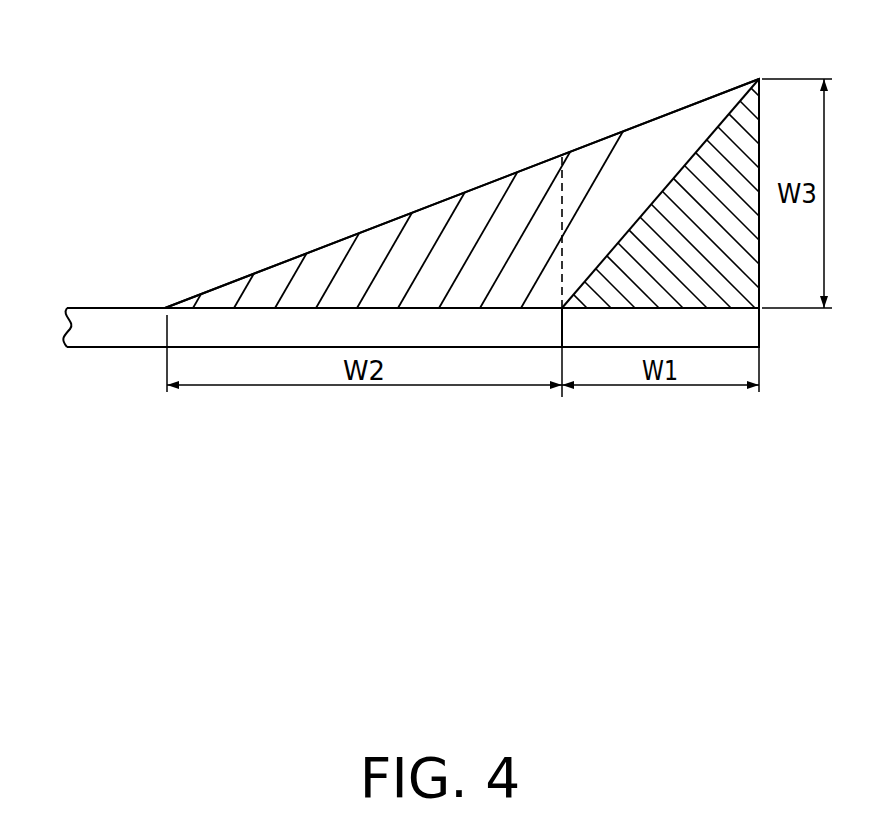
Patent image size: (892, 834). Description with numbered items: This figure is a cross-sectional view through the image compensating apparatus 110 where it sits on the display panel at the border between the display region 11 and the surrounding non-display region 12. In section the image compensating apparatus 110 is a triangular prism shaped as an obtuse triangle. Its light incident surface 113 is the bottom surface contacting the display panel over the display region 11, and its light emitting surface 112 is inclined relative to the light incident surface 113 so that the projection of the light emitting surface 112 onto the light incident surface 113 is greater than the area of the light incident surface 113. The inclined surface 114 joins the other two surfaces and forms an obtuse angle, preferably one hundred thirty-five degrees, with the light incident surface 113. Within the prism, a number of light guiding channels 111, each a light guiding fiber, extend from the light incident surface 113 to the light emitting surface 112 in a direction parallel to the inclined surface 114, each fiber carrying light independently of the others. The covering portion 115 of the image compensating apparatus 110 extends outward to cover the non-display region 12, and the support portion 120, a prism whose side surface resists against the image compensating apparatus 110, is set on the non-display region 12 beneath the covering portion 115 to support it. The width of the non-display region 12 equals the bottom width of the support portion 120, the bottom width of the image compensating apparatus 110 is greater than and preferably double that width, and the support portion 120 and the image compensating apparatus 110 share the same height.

The display region 11 is at (130, 327).
The non-display region 12 is at (732, 324).
The image compensating apparatus 110 is at (513, 80).
The light guiding channels 111 is at (467, 205).
The light emitting surface 112 is at (413, 212).
The light incident surface 113 is at (303, 307).
The inclined surface 114 is at (694, 154).
The covering portion 115 is at (605, 150).
The support portion 120 is at (678, 242).